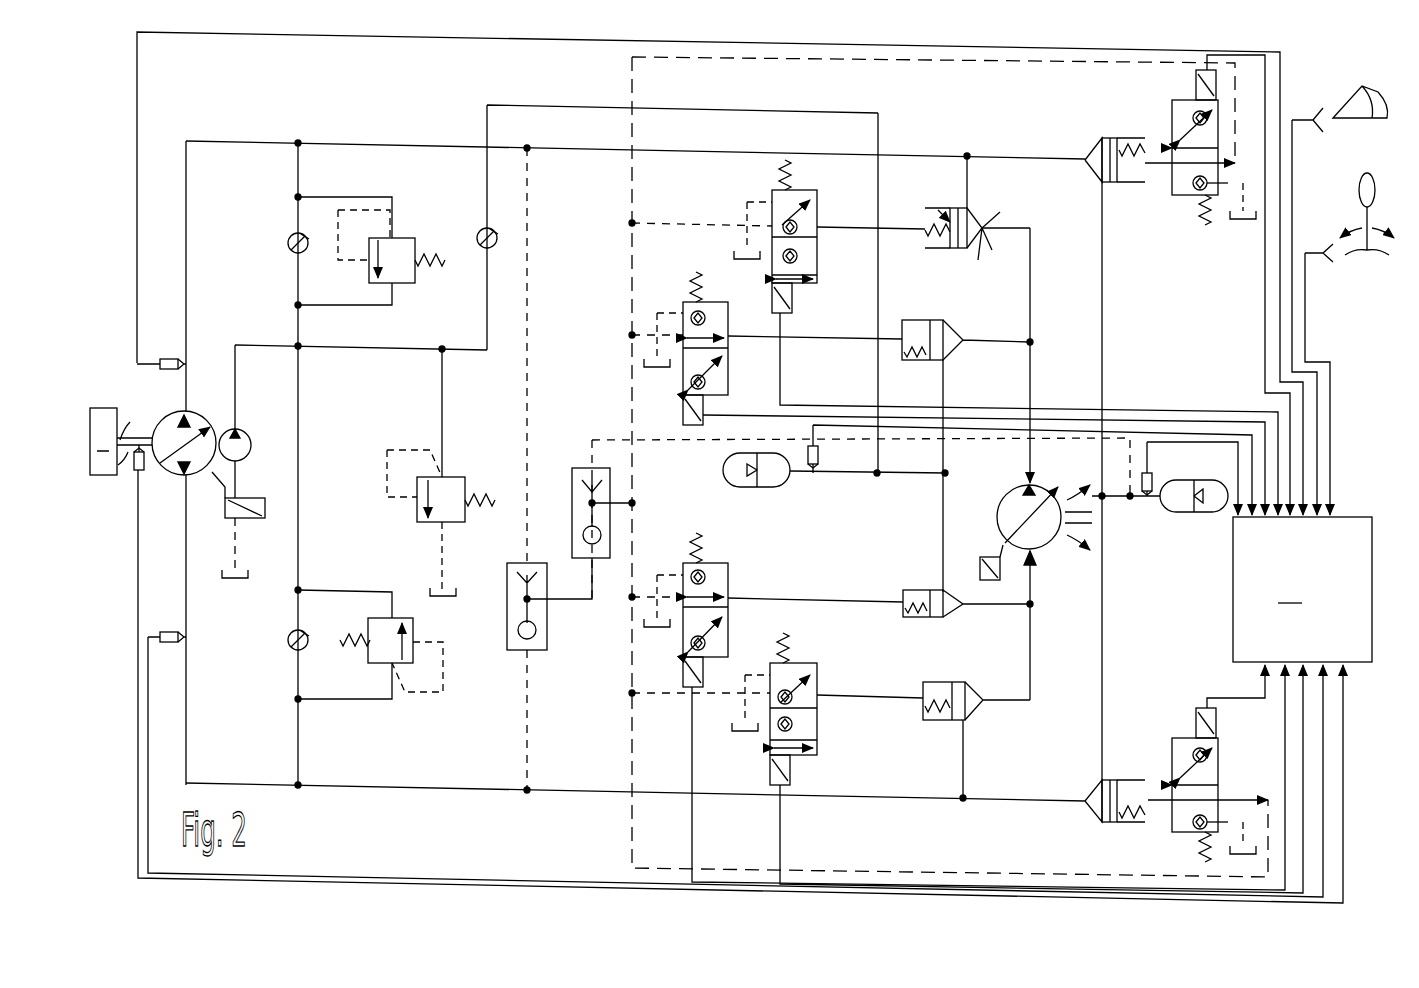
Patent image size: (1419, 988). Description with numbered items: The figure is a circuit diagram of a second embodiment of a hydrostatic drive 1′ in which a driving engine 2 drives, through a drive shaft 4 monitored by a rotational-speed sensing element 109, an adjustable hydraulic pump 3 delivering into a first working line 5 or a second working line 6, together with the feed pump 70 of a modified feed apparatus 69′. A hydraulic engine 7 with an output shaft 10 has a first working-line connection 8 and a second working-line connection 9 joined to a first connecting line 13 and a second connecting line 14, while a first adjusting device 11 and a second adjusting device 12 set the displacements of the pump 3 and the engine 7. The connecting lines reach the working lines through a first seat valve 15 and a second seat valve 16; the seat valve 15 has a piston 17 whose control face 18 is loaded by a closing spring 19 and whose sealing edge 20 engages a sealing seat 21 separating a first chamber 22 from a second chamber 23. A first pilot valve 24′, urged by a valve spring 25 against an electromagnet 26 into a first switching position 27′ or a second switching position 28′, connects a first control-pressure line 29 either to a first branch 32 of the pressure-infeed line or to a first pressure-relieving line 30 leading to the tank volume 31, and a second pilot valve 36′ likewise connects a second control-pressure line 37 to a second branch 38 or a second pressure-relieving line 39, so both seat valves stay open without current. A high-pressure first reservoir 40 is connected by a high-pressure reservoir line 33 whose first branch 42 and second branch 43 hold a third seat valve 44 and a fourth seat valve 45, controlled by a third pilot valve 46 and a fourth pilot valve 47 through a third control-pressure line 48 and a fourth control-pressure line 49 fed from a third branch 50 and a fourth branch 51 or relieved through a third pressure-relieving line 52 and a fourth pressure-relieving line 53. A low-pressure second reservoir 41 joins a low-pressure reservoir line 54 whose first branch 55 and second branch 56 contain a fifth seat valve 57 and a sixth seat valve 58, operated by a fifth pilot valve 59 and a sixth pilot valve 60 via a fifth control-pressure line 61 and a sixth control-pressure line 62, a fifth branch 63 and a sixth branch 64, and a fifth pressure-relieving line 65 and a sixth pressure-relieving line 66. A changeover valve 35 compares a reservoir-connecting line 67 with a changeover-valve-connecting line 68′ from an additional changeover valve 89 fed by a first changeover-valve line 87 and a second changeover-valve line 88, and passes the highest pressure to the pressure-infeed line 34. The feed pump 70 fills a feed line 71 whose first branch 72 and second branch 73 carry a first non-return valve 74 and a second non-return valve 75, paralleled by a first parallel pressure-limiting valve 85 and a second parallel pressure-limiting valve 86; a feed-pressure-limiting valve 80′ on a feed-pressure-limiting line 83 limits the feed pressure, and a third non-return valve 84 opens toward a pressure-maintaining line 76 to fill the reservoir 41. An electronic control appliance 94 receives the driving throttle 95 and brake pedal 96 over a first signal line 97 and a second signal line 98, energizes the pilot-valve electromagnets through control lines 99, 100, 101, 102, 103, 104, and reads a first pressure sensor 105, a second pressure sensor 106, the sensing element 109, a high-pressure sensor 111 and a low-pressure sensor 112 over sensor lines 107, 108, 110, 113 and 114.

The hydrostatic drive 1′ is at (137, 138).
The driving engine 2 is at (121, 441).
The hydraulic pump 3 is at (198, 430).
The drive shaft 4 is at (150, 440).
The first working line 5 is at (232, 141).
The second working line 6 is at (272, 786).
The hydraulic engine 7 is at (1010, 510).
The first working-line connection 8 is at (1027, 485).
The second working-line connection 9 is at (1030, 553).
The output shaft 10 is at (1078, 505).
The first adjusting device 11 is at (255, 520).
The second adjusting device 12 is at (978, 557).
The first connecting line 13 is at (1030, 278).
The second connecting line 14 is at (1030, 655).
The first seat valve 15 is at (925, 195).
The second seat valve 16 is at (920, 735).
The piston 17 is at (968, 222).
The control face 18 is at (948, 215).
The closing spring 19 is at (932, 252).
The sealing edge 20 is at (983, 250).
The sealing seat 21 is at (987, 222).
The first chamber 22 is at (960, 215).
The second chamber 23 is at (990, 228).
The first pilot valve 24′ is at (740, 180).
The valve spring 25 is at (792, 172).
The electromagnet 26 is at (790, 300).
The first switching position 27′ is at (817, 207).
The second switching position 28′ is at (817, 258).
The first control-pressure line 29 is at (867, 232).
The first pressure-relieving line 30 is at (747, 205).
The tank volume 31 is at (236, 580).
The first branch of the pressure-infeed line 32 is at (650, 222).
The high-pressure reservoir line 33 is at (1130, 500).
The pressure-infeed line 34 is at (630, 462).
The changeover valve 35 is at (572, 503).
The second pilot valve 36′ is at (758, 790).
The second control-pressure line 37 is at (836, 700).
The second branch of the pressure-infeed line 38 is at (668, 696).
The second pressure-relieving line 39 is at (745, 710).
The first reservoir 40 is at (1185, 505).
The second reservoir 41 is at (768, 480).
The first branch of the high-pressure reservoir line 42 is at (1048, 158).
The second branch of the high-pressure reservoir line 43 is at (1102, 690).
The third seat valve 44 is at (1112, 130).
The fourth seat valve 45 is at (1080, 822).
The third pilot valve 46 is at (1165, 130).
The fourth pilot valve 47 is at (1160, 825).
The third control-pressure line 48 is at (1162, 168).
The fourth control-pressure line 49 is at (1160, 798).
The third branch of the pressure-infeed line 50 is at (975, 63).
The fourth branch of the pressure-infeed line 51 is at (908, 870).
The third pressure-relieving line 52 is at (1222, 210).
The fourth pressure-relieving line 53 is at (1232, 818).
The low-pressure reservoir line 54 is at (836, 476).
The first branch of the low-pressure reservoir line 55 is at (945, 383).
The second branch of the low-pressure reservoir line 56 is at (943, 508).
The fifth seat valve 57 is at (905, 368).
The sixth seat valve 58 is at (905, 628).
The fifth pilot valve 59 is at (655, 397).
The sixth pilot valve 60 is at (655, 662).
The fifth control-pressure line 61 is at (758, 342).
The sixth control-pressure line 62 is at (790, 598).
The fifth branch of the pressure-infeed line 63 is at (640, 333).
The sixth branch of the pressure-infeed line 64 is at (638, 595).
The fifth pressure-relieving line 65 is at (663, 312).
The sixth pressure-relieving line 66 is at (664, 574).
The reservoir-connecting line 67 is at (592, 440).
The changeover-valve-connecting line 68′ is at (564, 602).
The modified feed apparatus 69′ is at (210, 307).
The feed pump 70 is at (245, 445).
The feed line 71 is at (262, 345).
The first branch of the feed line 72 is at (298, 170).
The second branch of the feed line 73 is at (298, 745).
The first non-return valve 74 is at (288, 243).
The second non-return valve 75 is at (290, 650).
The pressure-maintaining line 76 is at (487, 122).
The feed-pressure-limiting valve 80′ is at (455, 522).
The feed-pressure-limiting line 83 is at (442, 400).
The third non-return valve 84 is at (477, 232).
The first parallel pressure-limiting valve 85 is at (402, 285).
The second parallel pressure-limiting valve 86 is at (368, 655).
The first changeover-valve line 87 is at (527, 291).
The second changeover-valve line 88 is at (527, 712).
The additional changeover valve 89 is at (507, 618).
The electronic control appliance 94 is at (1302, 589).
The driving throttle 95 is at (1359, 190).
The brake pedal 96 is at (1362, 88).
The first signal line 97 is at (1305, 290).
The second signal line 98 is at (1292, 150).
The first control line 99 is at (1133, 410).
The second control line 100 is at (780, 830).
The third control line 101 is at (1265, 316).
The fourth control line 102 is at (1207, 698).
The fifth control line 103 is at (1168, 420).
The sixth control line 104 is at (692, 826).
The first pressure sensor 105 is at (170, 359).
The second pressure sensor 106 is at (170, 642).
The first sensor line 107 is at (137, 228).
The second sensor line 108 is at (148, 735).
The rotational-speed sensing element 109 is at (136, 475).
The third sensor line 110 is at (138, 548).
The high-pressure sensor 111 is at (1150, 495).
The low-pressure sensor 112 is at (813, 475).
The fourth sensor line 113 is at (1230, 445).
The fifth sensor line 114 is at (818, 452).